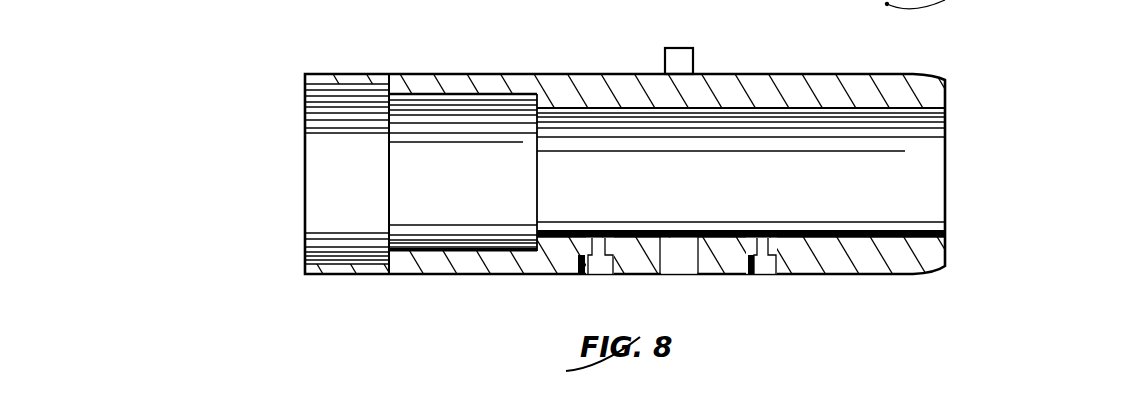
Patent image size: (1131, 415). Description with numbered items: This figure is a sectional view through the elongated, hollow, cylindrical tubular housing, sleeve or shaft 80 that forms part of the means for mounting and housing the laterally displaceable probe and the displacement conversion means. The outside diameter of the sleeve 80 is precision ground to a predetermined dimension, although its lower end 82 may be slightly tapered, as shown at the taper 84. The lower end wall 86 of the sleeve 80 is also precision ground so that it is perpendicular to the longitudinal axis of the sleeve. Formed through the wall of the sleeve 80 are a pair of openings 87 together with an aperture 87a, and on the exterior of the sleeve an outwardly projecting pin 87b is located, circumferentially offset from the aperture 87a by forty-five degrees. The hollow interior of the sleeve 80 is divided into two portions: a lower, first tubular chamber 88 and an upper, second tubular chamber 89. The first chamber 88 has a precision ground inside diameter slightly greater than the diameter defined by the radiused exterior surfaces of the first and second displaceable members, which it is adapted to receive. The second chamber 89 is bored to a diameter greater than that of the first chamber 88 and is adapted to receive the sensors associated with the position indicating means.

The tubular housing, sleeve or shaft 80 is at (262, 157).
The lower end 82 is at (932, 173).
The taper 84 is at (933, 72).
The lower end wall 86 is at (945, 98).
The openings 87 is at (602, 277).
The aperture 87a is at (673, 260).
The outwardly projecting pin 87b is at (673, 64).
The first tubular chamber 88 is at (721, 165).
The second tubular chamber 89 is at (467, 153).